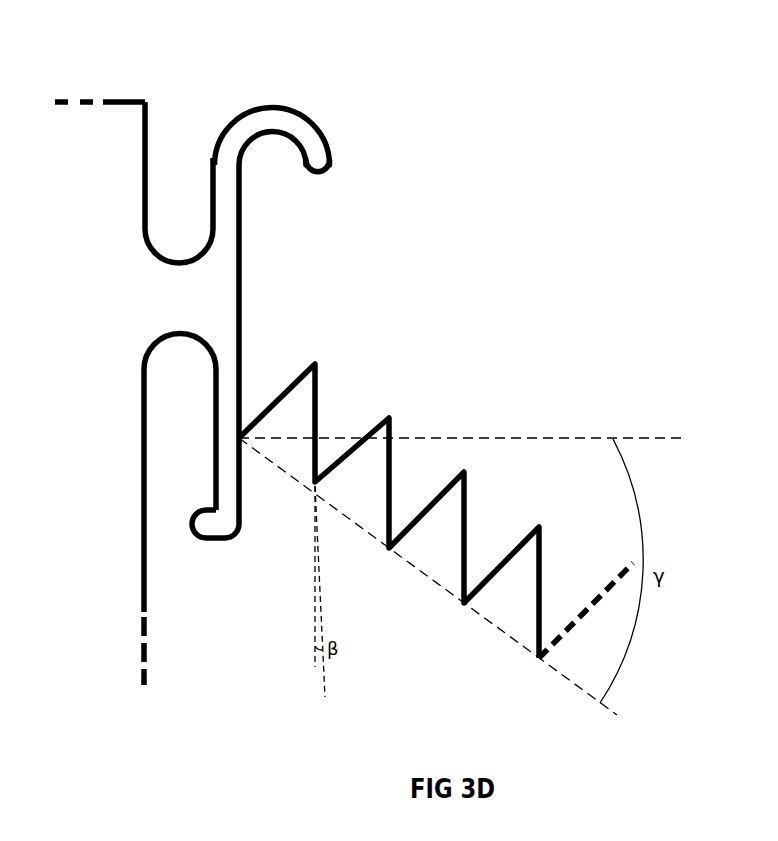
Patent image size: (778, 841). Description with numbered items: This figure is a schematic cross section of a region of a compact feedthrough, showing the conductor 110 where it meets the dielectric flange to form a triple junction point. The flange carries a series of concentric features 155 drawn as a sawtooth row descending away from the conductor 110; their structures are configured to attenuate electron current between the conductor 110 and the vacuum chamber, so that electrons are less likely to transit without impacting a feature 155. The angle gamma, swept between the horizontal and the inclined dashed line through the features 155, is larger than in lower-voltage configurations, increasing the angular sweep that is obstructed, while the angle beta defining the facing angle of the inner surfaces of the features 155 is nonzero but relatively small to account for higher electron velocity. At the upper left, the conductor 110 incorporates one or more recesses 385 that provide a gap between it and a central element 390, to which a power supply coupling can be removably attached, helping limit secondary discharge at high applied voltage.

The central element 390 is at (128, 100).
The recesses 385 is at (213, 153).
The conductor 110 is at (215, 297).
The features 155 is at (463, 605).